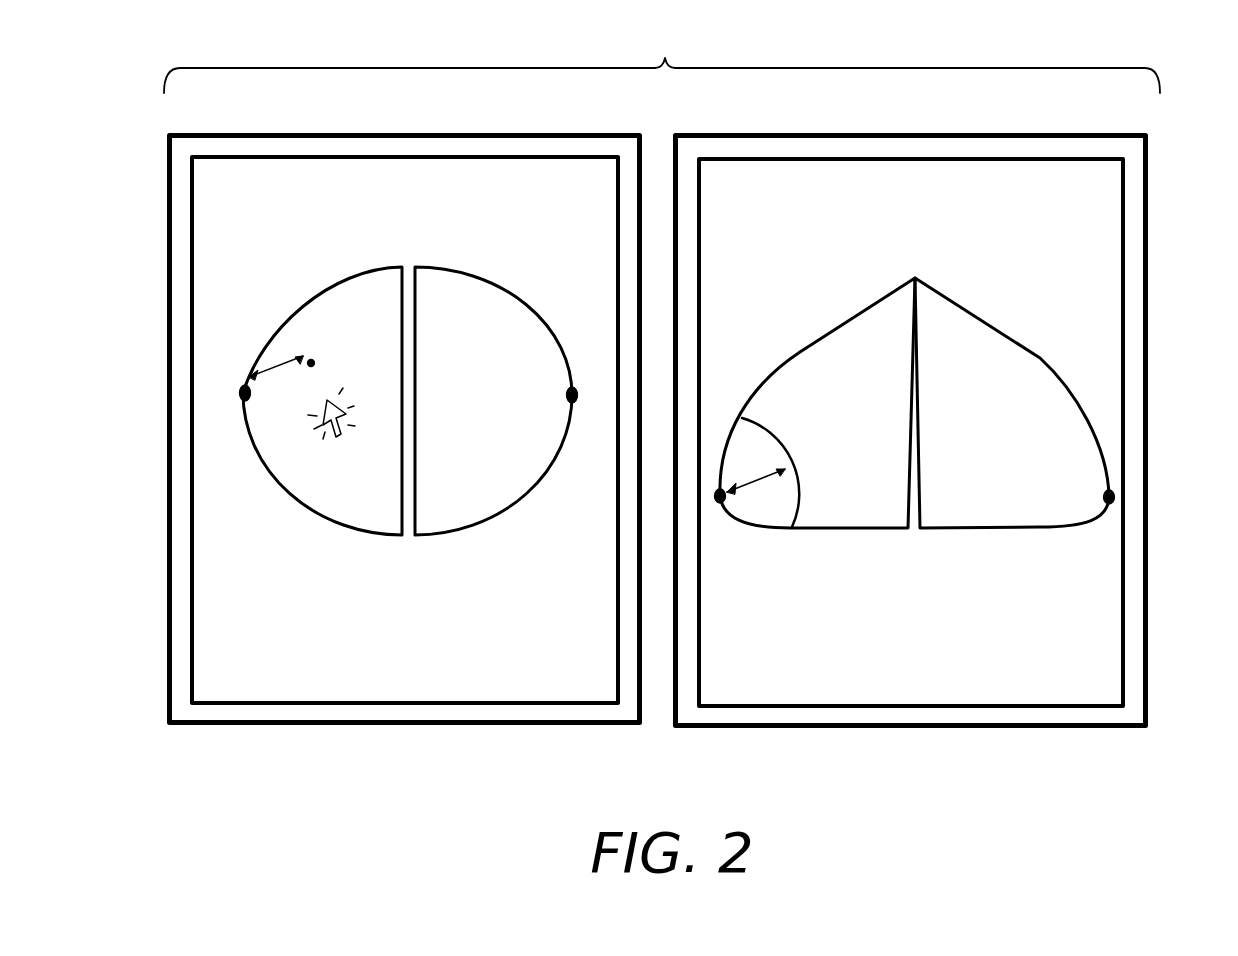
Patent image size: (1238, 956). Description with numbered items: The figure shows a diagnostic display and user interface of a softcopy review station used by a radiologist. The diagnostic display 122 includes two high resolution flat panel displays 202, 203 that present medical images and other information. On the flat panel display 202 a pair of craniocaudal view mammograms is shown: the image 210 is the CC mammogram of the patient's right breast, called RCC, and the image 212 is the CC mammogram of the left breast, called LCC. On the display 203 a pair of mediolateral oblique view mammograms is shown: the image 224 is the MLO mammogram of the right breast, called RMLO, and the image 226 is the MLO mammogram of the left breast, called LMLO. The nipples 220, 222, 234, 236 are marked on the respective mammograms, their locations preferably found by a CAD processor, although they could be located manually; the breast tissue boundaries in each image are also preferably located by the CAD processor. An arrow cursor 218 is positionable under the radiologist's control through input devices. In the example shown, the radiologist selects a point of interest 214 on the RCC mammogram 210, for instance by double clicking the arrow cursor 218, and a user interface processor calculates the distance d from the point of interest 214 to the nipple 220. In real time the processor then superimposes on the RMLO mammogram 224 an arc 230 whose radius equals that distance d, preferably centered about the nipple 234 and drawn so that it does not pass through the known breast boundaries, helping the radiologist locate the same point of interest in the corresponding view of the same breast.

The diagnostic display 122 is at (662, 50).
The flat panel display 202 is at (167, 588).
The flat panel display 203 is at (1145, 578).
The RCC mammogram image 210 is at (329, 290).
The LCC mammogram image 212 is at (503, 293).
The point of interest 214 is at (311, 360).
The arrow cursor 218 is at (339, 440).
The nipple 220 is at (243, 385).
The nipple 222 is at (576, 395).
The RMLO mammogram image 224 is at (828, 336).
The LMLO mammogram image 226 is at (993, 327).
The arc 230 is at (772, 432).
The nipple 234 is at (720, 503).
The nipple 236 is at (1108, 497).